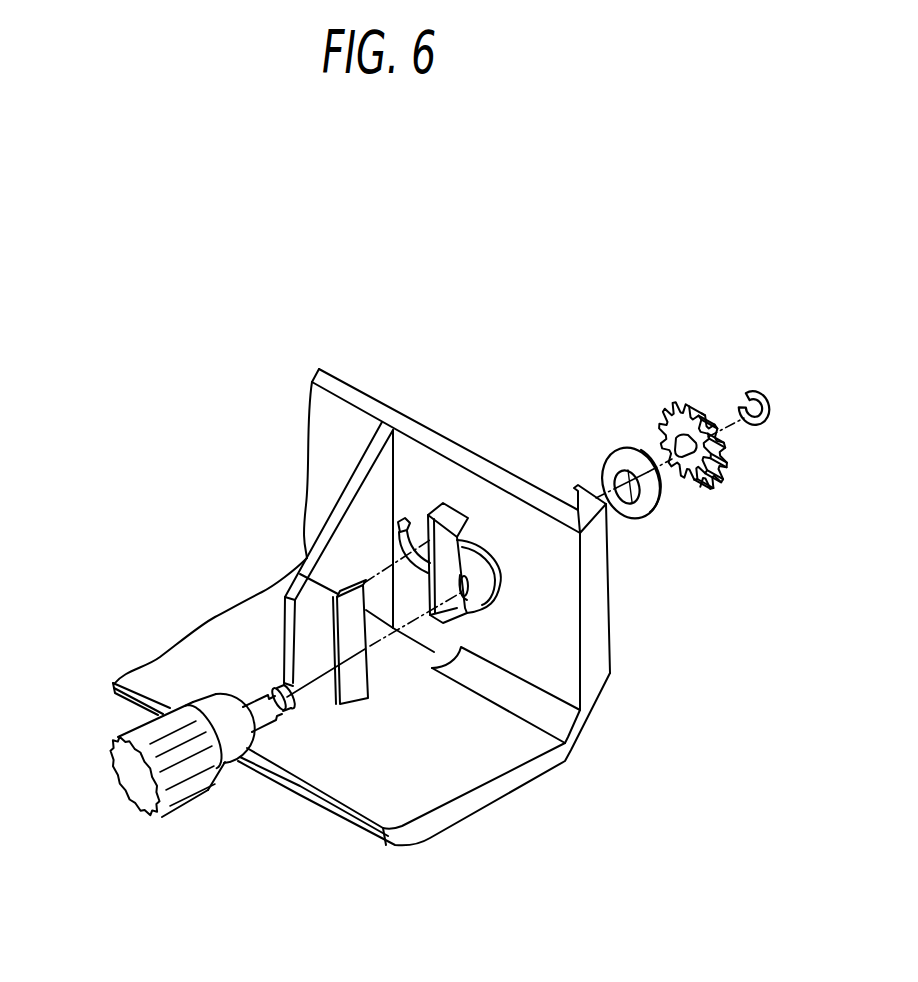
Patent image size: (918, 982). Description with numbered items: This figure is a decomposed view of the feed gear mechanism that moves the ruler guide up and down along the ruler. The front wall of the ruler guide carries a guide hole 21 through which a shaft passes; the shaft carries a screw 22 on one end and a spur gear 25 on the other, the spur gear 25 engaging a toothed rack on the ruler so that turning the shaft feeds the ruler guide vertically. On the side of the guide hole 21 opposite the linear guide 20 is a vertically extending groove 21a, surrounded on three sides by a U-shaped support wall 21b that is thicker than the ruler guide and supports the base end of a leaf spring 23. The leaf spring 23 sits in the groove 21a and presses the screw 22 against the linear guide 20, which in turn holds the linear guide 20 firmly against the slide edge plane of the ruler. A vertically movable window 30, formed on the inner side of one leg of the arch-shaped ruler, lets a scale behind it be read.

The linear guide 20 is at (570, 664).
The guide hole 21 is at (473, 589).
The vertically extending groove 21a is at (470, 527).
The U-shaped support wall 21b is at (423, 525).
The screw 22 is at (148, 798).
The leaf spring 23 is at (340, 591).
The spur gear 25 is at (694, 478).
The vertically movable window 30 is at (398, 518).